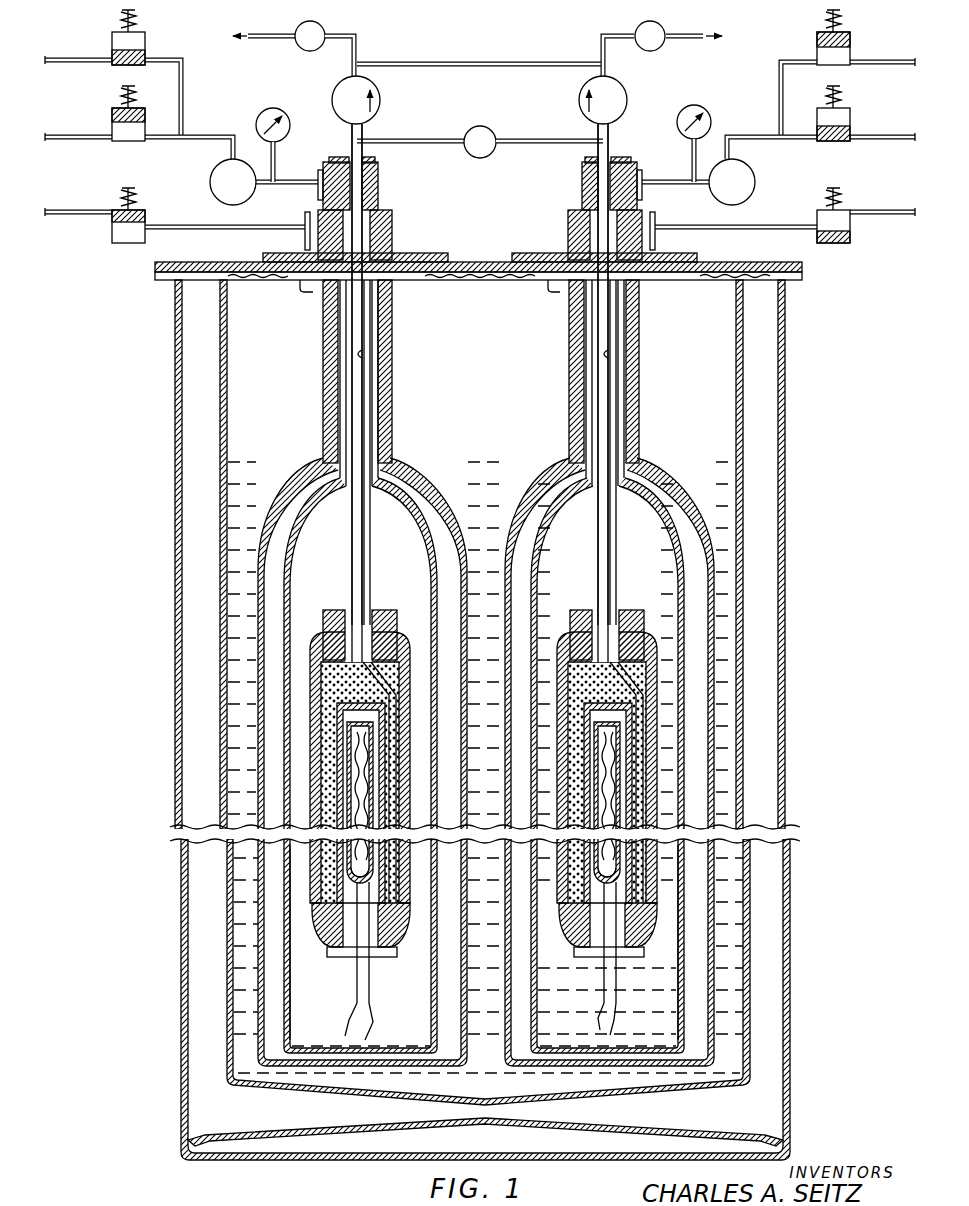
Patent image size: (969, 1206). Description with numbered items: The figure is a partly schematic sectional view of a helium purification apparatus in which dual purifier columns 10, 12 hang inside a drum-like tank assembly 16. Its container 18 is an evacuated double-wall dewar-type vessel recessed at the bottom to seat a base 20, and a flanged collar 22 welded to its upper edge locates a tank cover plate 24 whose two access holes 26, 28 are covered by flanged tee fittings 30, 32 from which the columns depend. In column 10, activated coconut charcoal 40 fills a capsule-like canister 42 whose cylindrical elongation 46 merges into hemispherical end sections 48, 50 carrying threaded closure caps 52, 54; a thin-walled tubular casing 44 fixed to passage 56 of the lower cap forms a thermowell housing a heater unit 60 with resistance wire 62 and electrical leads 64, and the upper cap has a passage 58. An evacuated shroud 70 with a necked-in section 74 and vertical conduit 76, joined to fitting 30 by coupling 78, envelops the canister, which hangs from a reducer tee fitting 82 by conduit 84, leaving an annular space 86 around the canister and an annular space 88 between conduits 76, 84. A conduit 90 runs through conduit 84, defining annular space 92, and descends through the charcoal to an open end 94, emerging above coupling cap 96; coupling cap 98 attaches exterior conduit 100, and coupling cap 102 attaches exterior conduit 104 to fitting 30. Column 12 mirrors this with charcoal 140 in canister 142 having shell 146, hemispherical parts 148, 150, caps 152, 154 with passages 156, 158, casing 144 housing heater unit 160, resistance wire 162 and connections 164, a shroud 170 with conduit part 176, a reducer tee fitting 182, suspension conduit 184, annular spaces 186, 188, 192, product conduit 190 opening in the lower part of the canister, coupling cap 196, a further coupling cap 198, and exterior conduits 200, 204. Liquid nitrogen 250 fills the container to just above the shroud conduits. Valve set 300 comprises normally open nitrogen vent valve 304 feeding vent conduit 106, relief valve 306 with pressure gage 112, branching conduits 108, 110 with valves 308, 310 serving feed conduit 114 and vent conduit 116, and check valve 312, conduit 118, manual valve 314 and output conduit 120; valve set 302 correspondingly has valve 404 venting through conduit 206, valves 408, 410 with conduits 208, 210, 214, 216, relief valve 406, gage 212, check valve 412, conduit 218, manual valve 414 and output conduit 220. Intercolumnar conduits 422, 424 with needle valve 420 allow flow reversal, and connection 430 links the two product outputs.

The purifier column 10 is at (328, 527).
The purifier column 12 is at (643, 540).
The tank assembly 16 is at (174, 362).
The container 18 is at (175, 415).
The base 20 is at (279, 1147).
The flanged collar 22 is at (167, 280).
The tank cover plate 24 is at (180, 263).
The access hole 26 is at (305, 281).
The access hole 28 is at (548, 281).
The flanged tee fitting 30 is at (392, 232).
The flanged tee fitting 32 is at (568, 232).
The activated coconut charcoal 40 is at (337, 688).
The canister 42 is at (309, 730).
The tubular casing 44 is at (338, 768).
The cylindrical elongation 46 is at (320, 790).
The hemispherical end section 48 is at (321, 638).
The hemispherical end section 50 is at (314, 925).
The closure cap 52 is at (383, 614).
The closure cap 54 is at (334, 958).
The passage 56 is at (372, 950).
The passage 58 is at (373, 650).
The heater unit 60 is at (352, 825).
The resistance wire 62 is at (350, 863).
The electrical leads 64 is at (371, 1016).
The shroud 70 is at (256, 563).
The necked-in section 74 is at (396, 466).
The vertical conduit 76 is at (324, 349).
The fluid tight coupling 78 is at (392, 298).
The reducer tee fitting 82 is at (378, 188).
The conduit 84 is at (349, 570).
The annular space 86 is at (302, 857).
The annular space 88 is at (370, 383).
The conduit 90 is at (360, 413).
The annular space 92 is at (362, 350).
The open end 94 is at (397, 922).
The coupling cap 96 is at (378, 162).
The coupling cap 98 is at (318, 173).
The exterior conduit 100 is at (300, 185).
The coupling cap 102 is at (305, 236).
The exterior conduit 104 is at (240, 230).
The nitrogen vent conduit 106 is at (80, 210).
The branching conduit 108 is at (183, 107).
The branching conduit 110 is at (158, 141).
The pressure gage 112 is at (268, 110).
The input conduit 114 is at (72, 64).
The vent conduit 116 is at (72, 141).
The conduit 118 is at (358, 50).
The product output conduit 120 is at (272, 39).
The activated coconut charcoal 140 is at (640, 679).
The canister 142 is at (660, 727).
The tubular casing 144 is at (631, 768).
The cylindrical shell 146 is at (713, 787).
The hemispherical part 148 is at (566, 636).
The hemispherical part 150 is at (658, 918).
The closure cap 152 is at (629, 614).
The closure cap 154 is at (587, 953).
The axial passage 156 is at (622, 955).
The axial passage 158 is at (635, 652).
The heater unit 160 is at (620, 843).
The resistance wire 162 is at (604, 862).
The connections 164 is at (600, 1012).
The insulating shroud 170 is at (710, 558).
The upper conduit part 176 is at (569, 349).
The reducer tee fitting 182 is at (582, 188).
The conduit 184 is at (597, 562).
The annular space 186 is at (667, 890).
The annular space 188 is at (616, 383).
The conduit 190 is at (608, 413).
The annular space 192 is at (608, 350).
The coupling cap 196 is at (582, 162).
The fitting 198 is at (642, 173).
The exterior conduit 200 is at (671, 185).
The exterior conduit 204 is at (722, 230).
The vent conduit 206 is at (887, 210).
The conduit 208 is at (779, 100).
The conduit 210 is at (803, 143).
The pressure gage 212 is at (690, 104).
The input feed conduit 214 is at (887, 64).
The vent conduit 216 is at (885, 141).
The conduit 218 is at (600, 46).
The product output conduit 220 is at (688, 39).
The liquid nitrogen 250 is at (483, 500).
The solenoid actuated valve set 300 is at (204, 53).
The solenoid actuated valve set 302 is at (738, 55).
The normally open valve 304 is at (112, 240).
The relief valve 306 is at (211, 167).
The normally closed valve 308 is at (112, 40).
The normally closed valve 310 is at (112, 122).
The one-way check valve 312 is at (381, 97).
The manually operable valve 314 is at (322, 27).
The normally open valve 404 is at (850, 240).
The relief valve 406 is at (752, 172).
The normally closed valve 408 is at (850, 45).
The normally closed valve 410 is at (850, 121).
The check valve 412 is at (580, 97).
The manually controlled valve 414 is at (636, 28).
The needle valve 420 is at (480, 126).
The intercolumnar connection conduit 422 is at (545, 138).
The intercolumnar connection conduit 424 is at (425, 138).
The conduit connection 430 is at (488, 61).